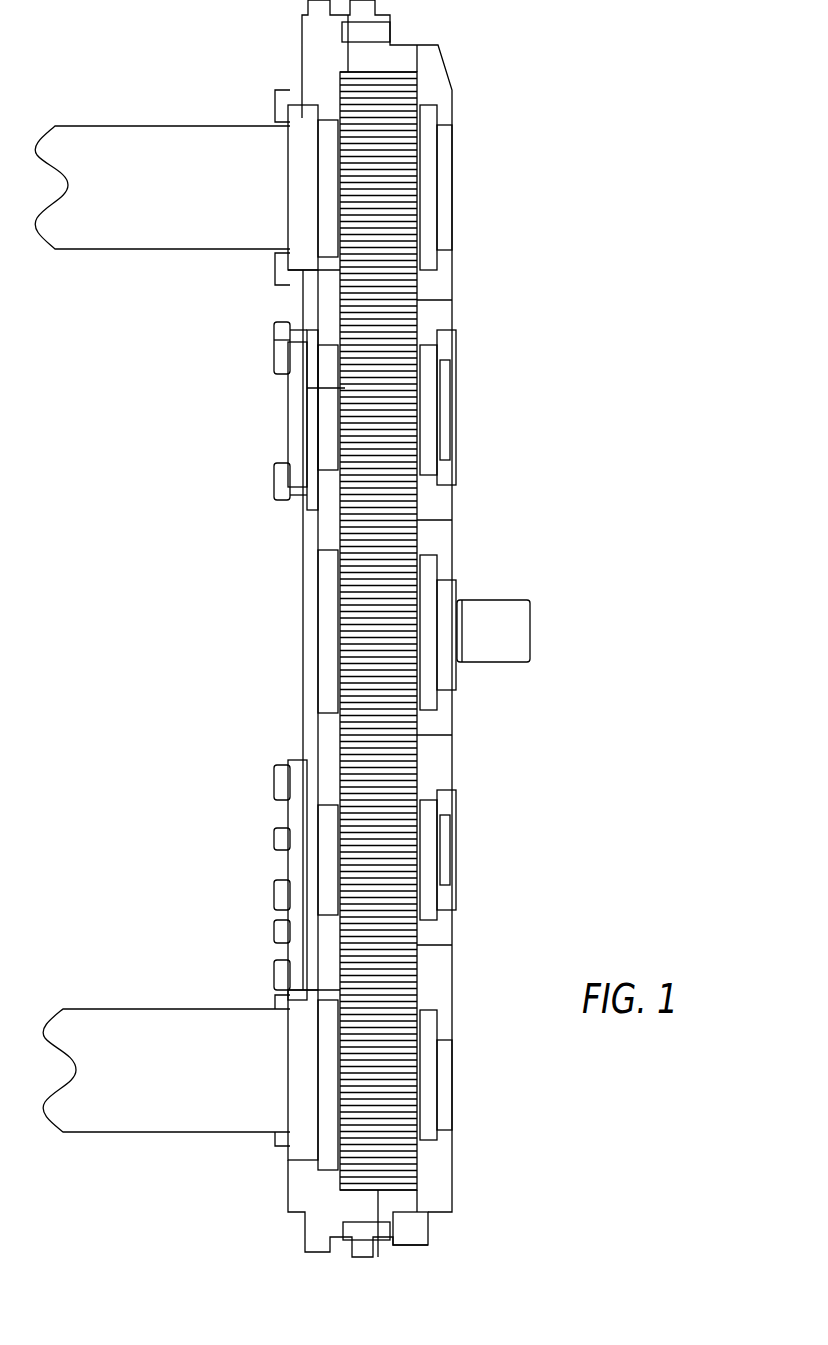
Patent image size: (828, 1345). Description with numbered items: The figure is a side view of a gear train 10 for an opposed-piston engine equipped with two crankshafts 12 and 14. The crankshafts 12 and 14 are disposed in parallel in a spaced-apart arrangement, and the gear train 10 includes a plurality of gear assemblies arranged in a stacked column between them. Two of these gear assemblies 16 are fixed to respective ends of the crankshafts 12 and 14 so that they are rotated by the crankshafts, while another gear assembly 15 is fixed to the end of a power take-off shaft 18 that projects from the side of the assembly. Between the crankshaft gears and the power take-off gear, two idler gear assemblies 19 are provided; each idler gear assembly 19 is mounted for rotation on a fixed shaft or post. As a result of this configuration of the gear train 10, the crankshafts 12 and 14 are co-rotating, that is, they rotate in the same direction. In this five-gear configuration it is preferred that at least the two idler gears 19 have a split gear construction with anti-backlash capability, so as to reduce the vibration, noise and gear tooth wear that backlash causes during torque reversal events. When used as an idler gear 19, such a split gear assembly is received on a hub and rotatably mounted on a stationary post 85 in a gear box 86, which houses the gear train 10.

The gear train 10 is at (598, 148).
The crankshaft 12 is at (152, 150).
The crankshaft 14 is at (165, 1030).
The gear assembly 15 is at (355, 632).
The gear assembly 16 is at (376, 124).
The power take-off shaft 18 is at (500, 630).
The idler gear assembly 19 is at (378, 392).
The stationary post 85 is at (345, 389).
The gear box 86 is at (293, 417).